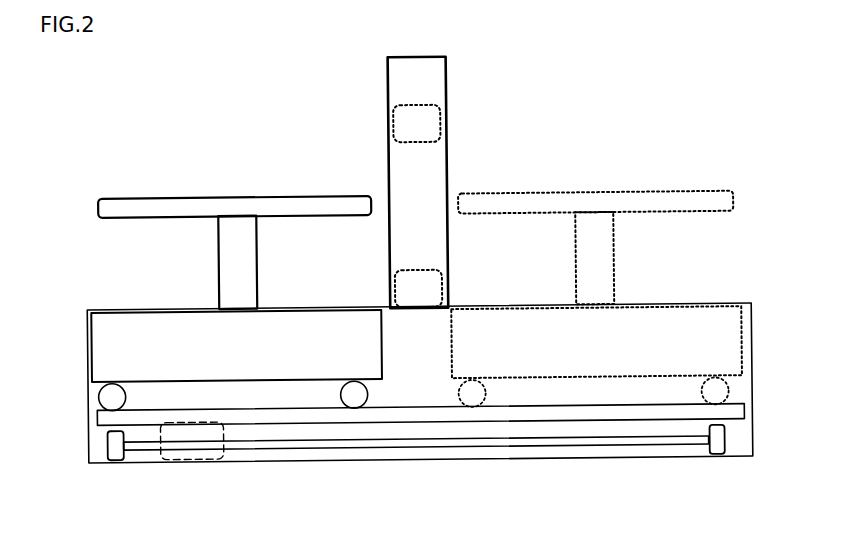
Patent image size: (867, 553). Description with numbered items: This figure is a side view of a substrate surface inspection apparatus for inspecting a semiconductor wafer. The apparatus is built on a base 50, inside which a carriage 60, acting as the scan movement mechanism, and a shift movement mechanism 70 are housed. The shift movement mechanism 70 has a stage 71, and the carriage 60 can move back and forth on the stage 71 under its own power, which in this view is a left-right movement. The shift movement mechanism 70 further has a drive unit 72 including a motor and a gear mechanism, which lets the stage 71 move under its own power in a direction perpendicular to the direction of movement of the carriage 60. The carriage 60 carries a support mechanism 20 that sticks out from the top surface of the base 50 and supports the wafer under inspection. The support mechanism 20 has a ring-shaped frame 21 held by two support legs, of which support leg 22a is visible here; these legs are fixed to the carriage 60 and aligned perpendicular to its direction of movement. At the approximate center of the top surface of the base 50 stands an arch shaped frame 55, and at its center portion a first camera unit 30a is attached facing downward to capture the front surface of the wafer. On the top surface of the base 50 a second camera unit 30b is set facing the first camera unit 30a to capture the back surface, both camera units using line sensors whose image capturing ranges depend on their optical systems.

The support mechanism 20 is at (127, 183).
The ring-shaped frame 21 is at (284, 204).
The support leg 22a is at (226, 269).
The first camera unit 30a is at (405, 117).
The second camera unit 30b is at (407, 280).
The base 50 is at (757, 384).
The arch shaped frame 55 is at (449, 63).
The carriage 60 is at (110, 344).
The shift movement mechanism 70 is at (333, 450).
The stage 71 is at (97, 413).
The drive unit 72 is at (180, 457).